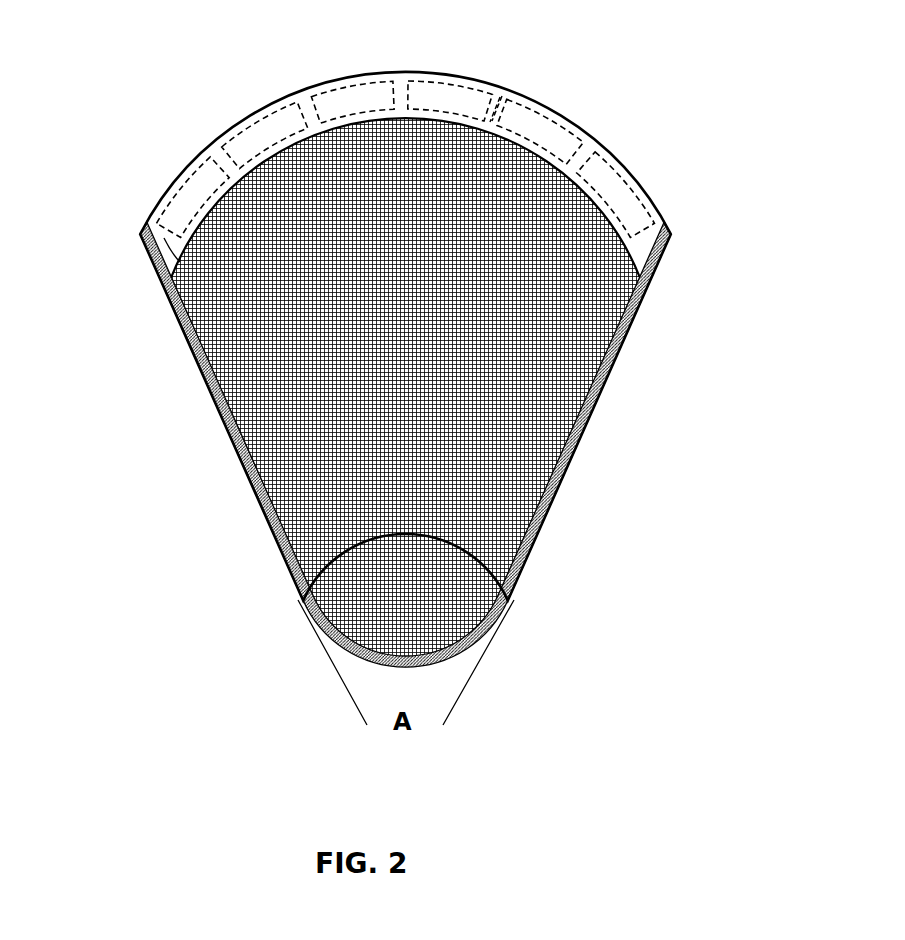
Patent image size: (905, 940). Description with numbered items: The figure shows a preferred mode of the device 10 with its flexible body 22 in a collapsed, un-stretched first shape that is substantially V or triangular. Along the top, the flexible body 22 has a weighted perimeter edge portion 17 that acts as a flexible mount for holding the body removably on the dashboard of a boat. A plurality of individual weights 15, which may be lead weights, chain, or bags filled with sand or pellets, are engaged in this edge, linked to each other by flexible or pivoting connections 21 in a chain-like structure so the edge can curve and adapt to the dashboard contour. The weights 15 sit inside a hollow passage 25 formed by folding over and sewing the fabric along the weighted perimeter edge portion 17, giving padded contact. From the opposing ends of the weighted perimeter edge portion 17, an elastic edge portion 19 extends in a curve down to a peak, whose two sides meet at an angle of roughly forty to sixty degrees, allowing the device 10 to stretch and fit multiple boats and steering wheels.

The device 10 is at (129, 181).
The individual weights 15 is at (353, 97).
The weighted perimeter edge portion 17 is at (593, 141).
The elastic edge portion 19 is at (573, 467).
The flexible or pivoting connections 21 is at (500, 113).
The flexible body 22 is at (557, 440).
The hollow passage 25 is at (162, 267).